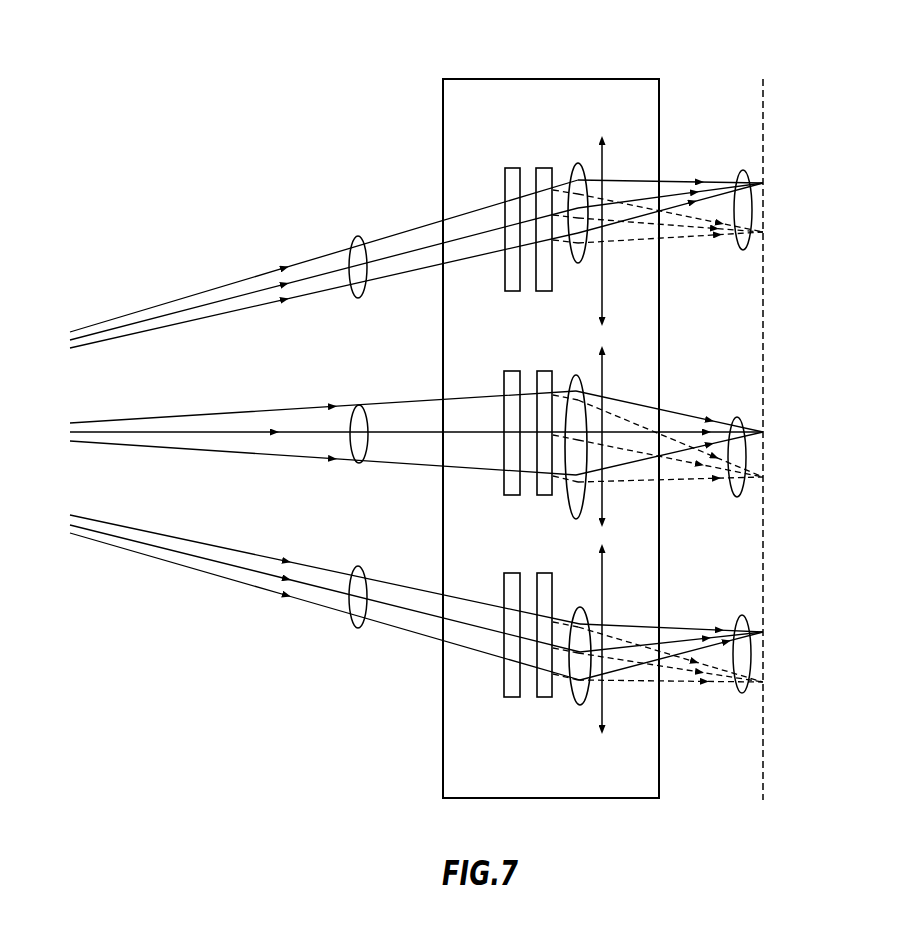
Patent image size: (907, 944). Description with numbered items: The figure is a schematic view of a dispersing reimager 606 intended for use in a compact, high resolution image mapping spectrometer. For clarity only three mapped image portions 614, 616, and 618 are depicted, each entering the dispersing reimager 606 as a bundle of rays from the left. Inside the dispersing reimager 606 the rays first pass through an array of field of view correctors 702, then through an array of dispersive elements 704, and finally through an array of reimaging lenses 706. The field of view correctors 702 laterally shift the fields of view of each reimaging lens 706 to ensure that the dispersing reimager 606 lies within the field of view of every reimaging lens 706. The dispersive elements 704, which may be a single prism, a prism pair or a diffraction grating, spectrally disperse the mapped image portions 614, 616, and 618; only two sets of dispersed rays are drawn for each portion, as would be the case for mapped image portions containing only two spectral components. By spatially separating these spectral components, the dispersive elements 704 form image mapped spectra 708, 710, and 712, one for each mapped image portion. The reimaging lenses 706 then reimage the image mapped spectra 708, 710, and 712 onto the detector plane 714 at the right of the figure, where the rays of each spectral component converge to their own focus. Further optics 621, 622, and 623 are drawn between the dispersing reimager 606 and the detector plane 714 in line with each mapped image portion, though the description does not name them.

The dispersing reimager 606 is at (574, 79).
The mapped image portion 614 is at (358, 236).
The mapped image portion 616 is at (358, 405).
The mapped image portion 618 is at (357, 627).
The first output lens 621 is at (752, 214).
The second output lens 622 is at (747, 462).
The third output lens 623 is at (751, 659).
The field of view corrector 702 is at (512, 168).
The dispersive element 704 is at (554, 176).
The reimaging lens 706 is at (603, 166).
The image mapped spectrum 708 is at (577, 263).
The image mapped spectrum 710 is at (577, 518).
The image mapped spectrum 712 is at (580, 705).
The detector plane 714 is at (765, 124).